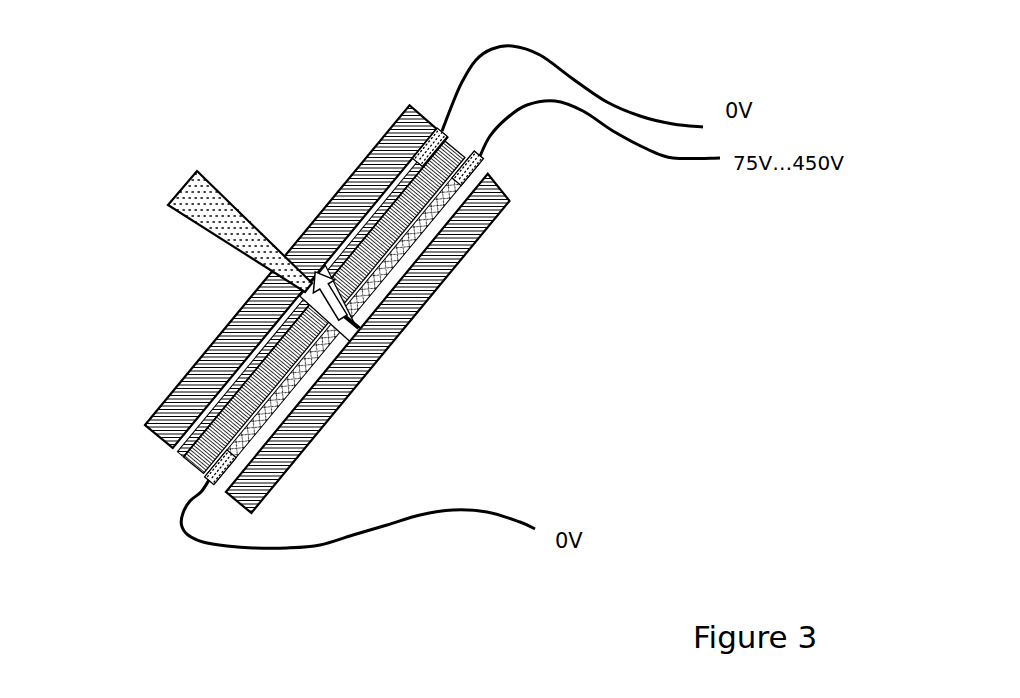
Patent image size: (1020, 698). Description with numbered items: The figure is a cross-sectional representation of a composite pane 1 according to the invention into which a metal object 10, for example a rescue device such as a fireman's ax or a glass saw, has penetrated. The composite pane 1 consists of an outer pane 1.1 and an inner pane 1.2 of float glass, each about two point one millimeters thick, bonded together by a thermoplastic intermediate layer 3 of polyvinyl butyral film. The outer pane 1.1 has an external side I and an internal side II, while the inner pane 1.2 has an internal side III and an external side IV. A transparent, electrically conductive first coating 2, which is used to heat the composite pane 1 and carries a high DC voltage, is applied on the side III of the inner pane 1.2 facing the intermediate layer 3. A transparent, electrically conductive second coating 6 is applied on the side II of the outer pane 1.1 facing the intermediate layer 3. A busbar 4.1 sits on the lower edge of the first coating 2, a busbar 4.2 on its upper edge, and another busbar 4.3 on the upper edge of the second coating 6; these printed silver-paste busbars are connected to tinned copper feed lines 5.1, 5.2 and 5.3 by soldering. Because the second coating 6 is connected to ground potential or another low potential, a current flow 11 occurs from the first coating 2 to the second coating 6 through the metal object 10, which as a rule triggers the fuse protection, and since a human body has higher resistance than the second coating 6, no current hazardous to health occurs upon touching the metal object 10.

The composite pane 1 is at (297, 130).
The first pane, outer pane 1.1 is at (177, 423).
The second pane, inner pane 1.2 is at (353, 378).
The first coating 2 is at (265, 437).
The intermediate layer 3 is at (263, 385).
The busbar 4.1 is at (203, 466).
The busbar 4.2 is at (490, 175).
The busbar 4.3 is at (427, 122).
The feed line 5.1 is at (220, 543).
The feed line 5.2 is at (583, 112).
The feed line 5.3 is at (565, 63).
The second coating 6 is at (377, 218).
The metal object 10 is at (203, 205).
The current flow 11 is at (327, 297).
The external side of the outer pane 1.1 I is at (296, 221).
The internal side of the outer pane 1.1 II is at (420, 157).
The internal side of the inner pane 1.2 III is at (484, 176).
The external side of the inner pane 1.2 IV is at (457, 287).